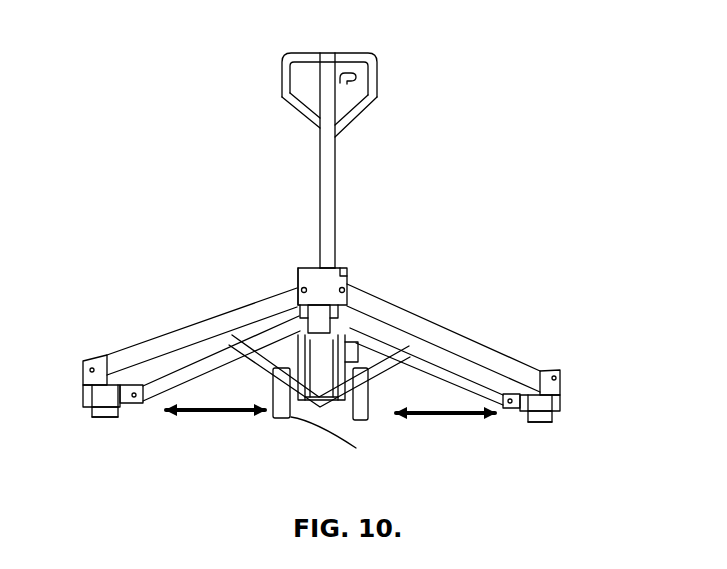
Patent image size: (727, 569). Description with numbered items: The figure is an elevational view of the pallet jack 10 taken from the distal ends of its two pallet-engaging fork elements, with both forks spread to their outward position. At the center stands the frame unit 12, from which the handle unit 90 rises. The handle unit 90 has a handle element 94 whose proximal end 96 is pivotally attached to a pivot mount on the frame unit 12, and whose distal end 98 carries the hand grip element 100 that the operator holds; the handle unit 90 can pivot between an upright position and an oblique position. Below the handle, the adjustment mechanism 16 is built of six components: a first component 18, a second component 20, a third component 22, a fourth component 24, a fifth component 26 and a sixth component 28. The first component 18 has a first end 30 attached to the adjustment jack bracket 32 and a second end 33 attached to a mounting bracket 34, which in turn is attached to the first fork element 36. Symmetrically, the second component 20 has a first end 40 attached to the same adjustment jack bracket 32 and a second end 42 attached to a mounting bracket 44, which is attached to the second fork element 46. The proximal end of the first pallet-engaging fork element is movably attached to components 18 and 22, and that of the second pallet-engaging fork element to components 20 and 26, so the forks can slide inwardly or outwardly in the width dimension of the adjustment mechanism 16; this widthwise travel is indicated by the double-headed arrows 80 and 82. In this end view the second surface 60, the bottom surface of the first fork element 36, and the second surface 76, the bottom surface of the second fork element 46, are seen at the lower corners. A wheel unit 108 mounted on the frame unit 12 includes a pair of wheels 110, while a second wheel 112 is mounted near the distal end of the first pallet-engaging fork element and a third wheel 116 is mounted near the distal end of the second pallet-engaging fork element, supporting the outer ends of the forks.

The pallet jack 10 is at (215, 187).
The frame unit 12 is at (382, 252).
The adjustment mechanism 16 is at (235, 268).
The first component 18 is at (435, 314).
The second component 20 is at (191, 316).
The third component 22 is at (421, 372).
The fourth component 24 is at (370, 380).
The fifth component 26 is at (192, 381).
The sixth component 28 is at (272, 375).
The first end 30 is at (350, 298).
The adjustment jack bracket 32 is at (322, 290).
The second end 33 is at (543, 369).
The mounting bracket 34 is at (563, 382).
The first fork element 36 is at (563, 401).
The first end 40 is at (280, 296).
The second end 42 is at (103, 353).
The mounting bracket 44 is at (82, 377).
The second fork element 46 is at (82, 393).
The second surface 60 is at (540, 423).
The second surface 76 is at (102, 417).
The double-headed arrow 80 is at (447, 416).
The double-headed arrow 82 is at (212, 412).
The handle unit 90 is at (431, 129).
The handle element 94 is at (337, 165).
The proximal end 96 is at (322, 258).
The distal end 98 is at (337, 137).
The hand grip element 100 is at (325, 52).
The wheel unit 108 is at (262, 461).
The pair of wheels 110 is at (352, 420).
The second wheel 112 is at (527, 424).
The third wheel 116 is at (120, 417).